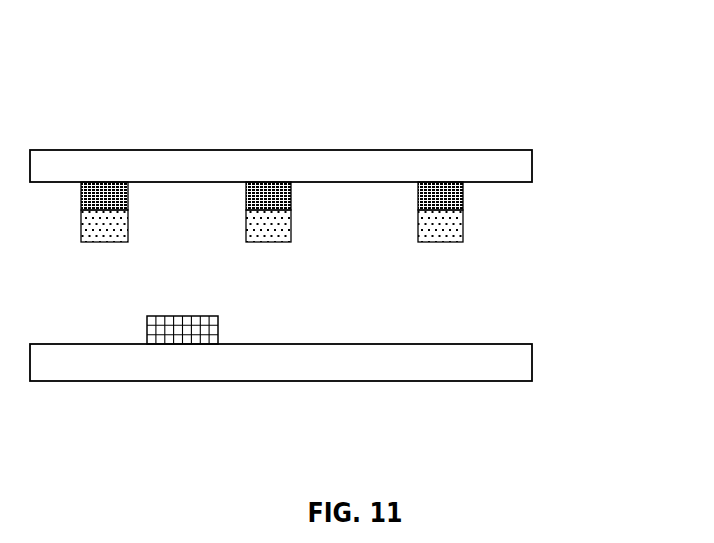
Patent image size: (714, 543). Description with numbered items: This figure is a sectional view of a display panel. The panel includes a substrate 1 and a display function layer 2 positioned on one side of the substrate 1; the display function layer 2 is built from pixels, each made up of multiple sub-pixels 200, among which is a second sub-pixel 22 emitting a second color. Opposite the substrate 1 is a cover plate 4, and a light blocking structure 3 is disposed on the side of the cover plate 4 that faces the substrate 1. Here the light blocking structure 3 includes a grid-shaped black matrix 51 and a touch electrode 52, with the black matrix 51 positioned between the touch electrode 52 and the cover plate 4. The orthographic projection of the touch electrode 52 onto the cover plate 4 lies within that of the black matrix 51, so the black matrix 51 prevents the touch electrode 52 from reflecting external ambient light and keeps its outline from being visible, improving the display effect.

The substrate 1 is at (532, 363).
The display function layer 2 is at (201, 388).
The second sub-pixel 22 is at (196, 327).
The sub-pixels 200 is at (153, 327).
The light blocking structure 3 is at (278, 125).
The cover plate 4 is at (532, 162).
The black matrix 51 is at (269, 192).
The touch electrode 52 is at (242, 65).